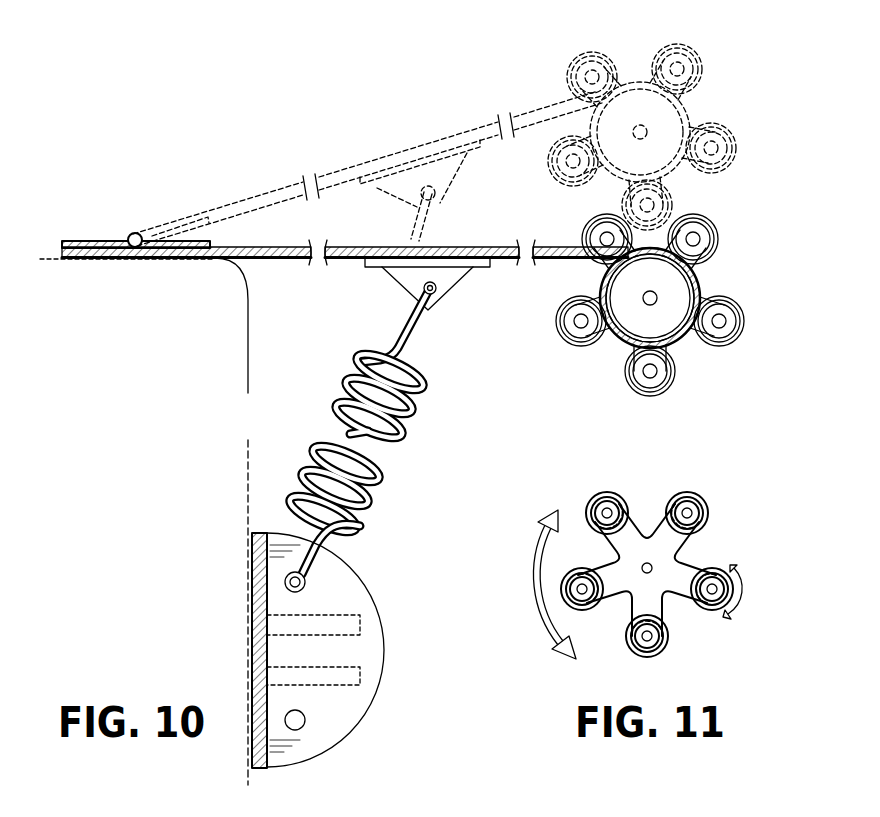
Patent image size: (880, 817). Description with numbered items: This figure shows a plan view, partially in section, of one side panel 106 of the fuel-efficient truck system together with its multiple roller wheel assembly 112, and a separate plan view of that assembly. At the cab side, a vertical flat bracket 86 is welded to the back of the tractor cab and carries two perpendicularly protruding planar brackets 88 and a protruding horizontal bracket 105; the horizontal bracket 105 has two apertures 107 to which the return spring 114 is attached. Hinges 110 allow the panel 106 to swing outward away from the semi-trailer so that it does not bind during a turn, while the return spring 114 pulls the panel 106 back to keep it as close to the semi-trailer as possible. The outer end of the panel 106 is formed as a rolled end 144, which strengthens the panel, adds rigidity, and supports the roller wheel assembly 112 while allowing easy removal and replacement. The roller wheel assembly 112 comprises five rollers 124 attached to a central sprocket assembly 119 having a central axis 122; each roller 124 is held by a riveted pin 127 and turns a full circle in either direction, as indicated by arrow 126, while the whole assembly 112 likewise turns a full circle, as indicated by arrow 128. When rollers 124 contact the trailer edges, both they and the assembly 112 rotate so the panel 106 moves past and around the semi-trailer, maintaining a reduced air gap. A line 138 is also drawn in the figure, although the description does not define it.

In FIG. 10, the vertical flat bracket 86 is at (256, 772).
In FIG. 10, the protruding planar brackets 88 is at (362, 618).
In FIG. 10, the protruding horizontal bracket 105 is at (345, 725).
In FIG. 10, the side panel 106 is at (380, 155).
In FIG. 10, the apertures 107 is at (306, 582).
In FIG. 10, the hinges 110 is at (90, 240).
In FIG. 10, the multiple roller wheel assembly 112 is at (615, 393).
In FIG. 11, the multiple roller wheel assembly 112 is at (705, 638).
In FIG. 10, the return spring 114 is at (414, 426).
In FIG. 11, the central sprocket assembly 119 is at (710, 550).
In FIG. 10, the central axis 122 is at (652, 297).
In FIG. 11, the central axis 122 is at (650, 560).
In FIG. 10, the rollers 124 is at (742, 318).
In FIG. 11, the rollers 124 is at (604, 500).
In FIG. 11, the arrow 126 is at (752, 600).
In FIG. 10, the riveted pin 127 is at (706, 236).
In FIG. 11, the arrow 128 is at (538, 560).
In FIG. 10, the frame line 138 is at (251, 440).
In FIG. 10, the rolled end 144 is at (683, 340).